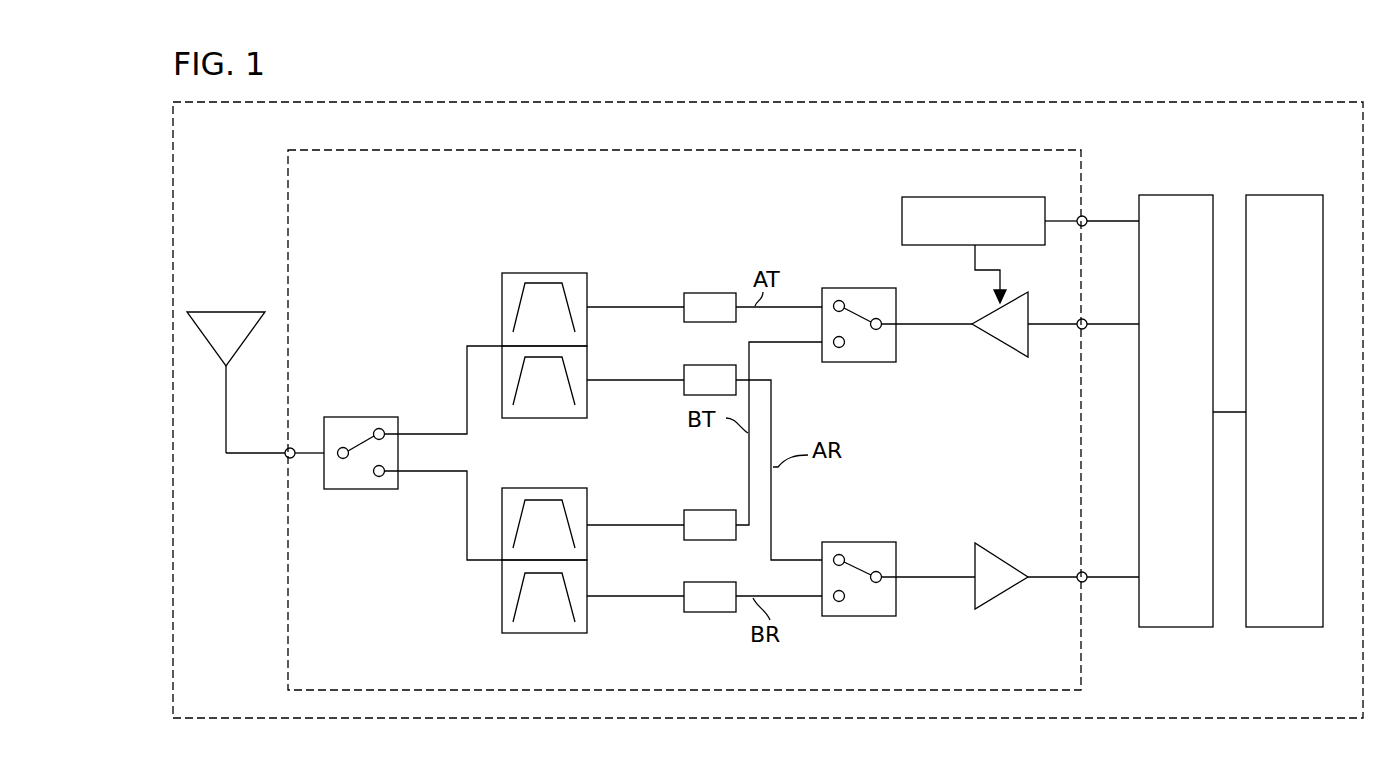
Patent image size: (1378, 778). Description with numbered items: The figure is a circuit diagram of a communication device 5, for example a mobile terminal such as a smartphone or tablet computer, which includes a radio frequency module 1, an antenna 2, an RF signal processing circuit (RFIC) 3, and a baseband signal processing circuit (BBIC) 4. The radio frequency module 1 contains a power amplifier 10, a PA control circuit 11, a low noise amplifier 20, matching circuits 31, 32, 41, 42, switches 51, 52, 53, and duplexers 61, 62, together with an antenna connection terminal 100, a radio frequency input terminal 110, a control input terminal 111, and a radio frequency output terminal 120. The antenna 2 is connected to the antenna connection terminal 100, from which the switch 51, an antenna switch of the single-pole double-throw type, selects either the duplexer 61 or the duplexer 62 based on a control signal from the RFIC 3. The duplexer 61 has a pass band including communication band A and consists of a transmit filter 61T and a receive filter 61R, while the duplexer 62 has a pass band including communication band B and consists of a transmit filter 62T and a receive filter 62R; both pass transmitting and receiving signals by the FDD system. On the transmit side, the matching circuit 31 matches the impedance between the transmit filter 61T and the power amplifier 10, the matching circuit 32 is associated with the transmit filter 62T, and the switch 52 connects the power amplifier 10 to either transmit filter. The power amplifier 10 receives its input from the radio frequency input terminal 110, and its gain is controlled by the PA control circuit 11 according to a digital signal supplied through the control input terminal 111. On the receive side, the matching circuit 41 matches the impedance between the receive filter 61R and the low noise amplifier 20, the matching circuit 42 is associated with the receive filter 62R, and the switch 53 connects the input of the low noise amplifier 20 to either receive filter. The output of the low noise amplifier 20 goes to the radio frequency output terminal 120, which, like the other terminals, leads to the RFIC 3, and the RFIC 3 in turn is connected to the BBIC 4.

The radio frequency module 1 is at (1045, 150).
The antenna 2 is at (238, 311).
The RF signal processing circuit (RFIC) 3 is at (1172, 195).
The baseband signal processing circuit (BBIC) 4 is at (1283, 195).
The communication device 5 is at (1300, 102).
The power amplifier 10 is at (1003, 345).
The PA control circuit 11 is at (902, 222).
The low noise amplifier 20 is at (998, 600).
The matching circuit 31 is at (713, 293).
The matching circuit 32 is at (708, 541).
The matching circuit 41 is at (712, 365).
The matching circuit 42 is at (708, 613).
The switch 51 is at (352, 417).
The switch 52 is at (870, 288).
The switch 53 is at (868, 542).
The duplexer 61 is at (599, 346).
The transmit filter 61T is at (587, 286).
The receive filter 61R is at (587, 358).
The duplexer 62 is at (599, 561).
The transmit filter 62T is at (587, 502).
The receive filter 62R is at (587, 575).
The antenna connection terminal 100 is at (286, 458).
The radio frequency input terminal 110 is at (1086, 319).
The control input terminal 111 is at (1086, 216).
The radio frequency output terminal 120 is at (1086, 584).